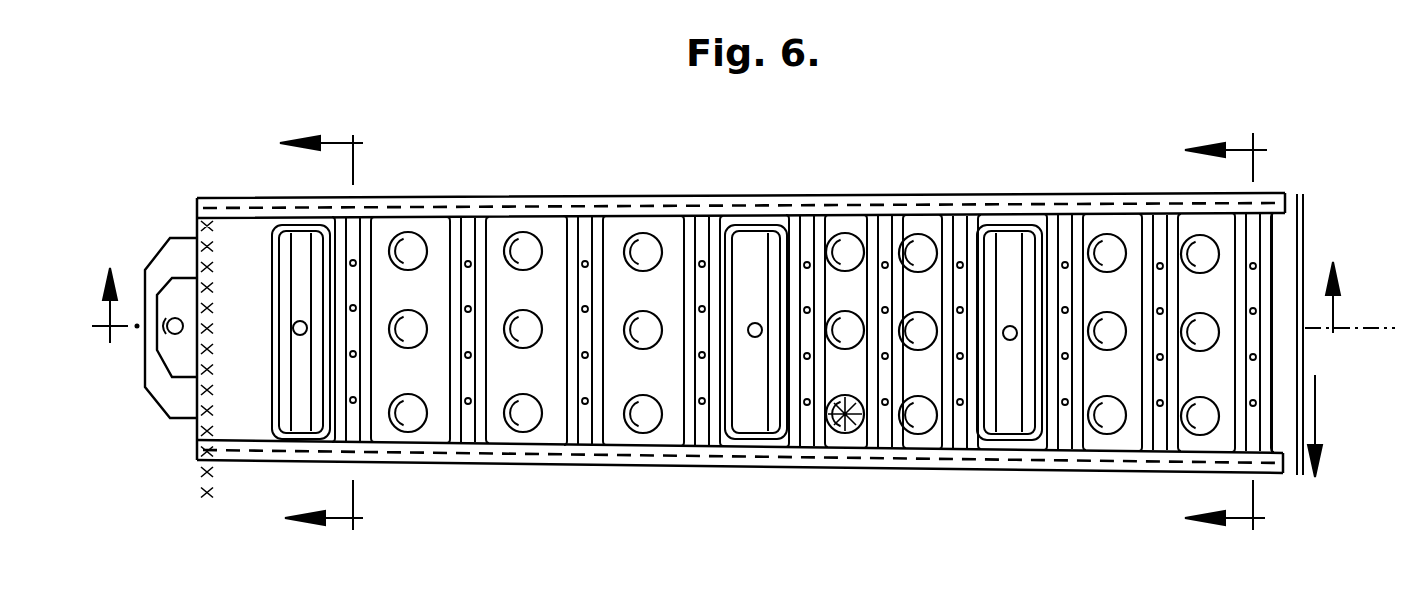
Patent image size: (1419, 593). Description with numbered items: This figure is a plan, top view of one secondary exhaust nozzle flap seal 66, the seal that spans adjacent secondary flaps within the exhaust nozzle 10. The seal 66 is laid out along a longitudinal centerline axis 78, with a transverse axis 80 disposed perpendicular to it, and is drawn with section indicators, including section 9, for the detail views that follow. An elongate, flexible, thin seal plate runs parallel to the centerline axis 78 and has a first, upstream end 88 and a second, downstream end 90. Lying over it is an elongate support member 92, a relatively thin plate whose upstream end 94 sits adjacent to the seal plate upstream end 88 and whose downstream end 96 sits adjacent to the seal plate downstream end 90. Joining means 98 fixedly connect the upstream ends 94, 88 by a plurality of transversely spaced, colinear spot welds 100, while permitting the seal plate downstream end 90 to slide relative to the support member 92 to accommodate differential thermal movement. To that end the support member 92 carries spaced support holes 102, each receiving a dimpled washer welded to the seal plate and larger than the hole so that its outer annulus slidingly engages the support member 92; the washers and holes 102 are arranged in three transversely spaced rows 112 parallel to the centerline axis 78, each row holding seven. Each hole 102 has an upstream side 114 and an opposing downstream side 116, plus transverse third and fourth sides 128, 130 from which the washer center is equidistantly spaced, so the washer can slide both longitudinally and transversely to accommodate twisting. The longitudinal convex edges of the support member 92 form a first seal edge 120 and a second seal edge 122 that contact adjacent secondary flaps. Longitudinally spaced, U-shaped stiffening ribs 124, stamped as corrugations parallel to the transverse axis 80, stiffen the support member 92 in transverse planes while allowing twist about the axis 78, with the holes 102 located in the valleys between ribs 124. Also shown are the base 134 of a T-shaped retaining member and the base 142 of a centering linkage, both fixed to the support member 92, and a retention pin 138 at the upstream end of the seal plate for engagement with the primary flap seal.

The secondary exhaust nozzle flap seal 66 is at (944, 186).
The longitudinal centerline axis 78 is at (1392, 330).
The transverse axis 80 is at (1325, 410).
The seal plate upstream end 88 is at (180, 238).
The seal plate downstream end 90 is at (1301, 196).
The support member 92 is at (1148, 184).
The support member upstream end 94 is at (229, 227).
The support member downstream end 96 is at (1296, 195).
The joining means 98 is at (916, 222).
The spot welds 100 is at (197, 432).
The support holes 102 is at (1102, 248).
The rows 112 is at (392, 318).
The upstream side 114 is at (855, 468).
The downstream side 116 is at (820, 468).
The first seal edge 120 is at (808, 200).
The second seal edge 122 is at (708, 466).
The stiffening ribs 124 is at (1066, 444).
The third side 128 is at (840, 470).
The fourth side 130 is at (843, 393).
The base 134 is at (300, 336).
The retention pin 138 is at (170, 290).
The base 142 is at (755, 322).
The exhaust nozzle 10 is at (325, 336).
The section line 9- 9 is at (1226, 337).